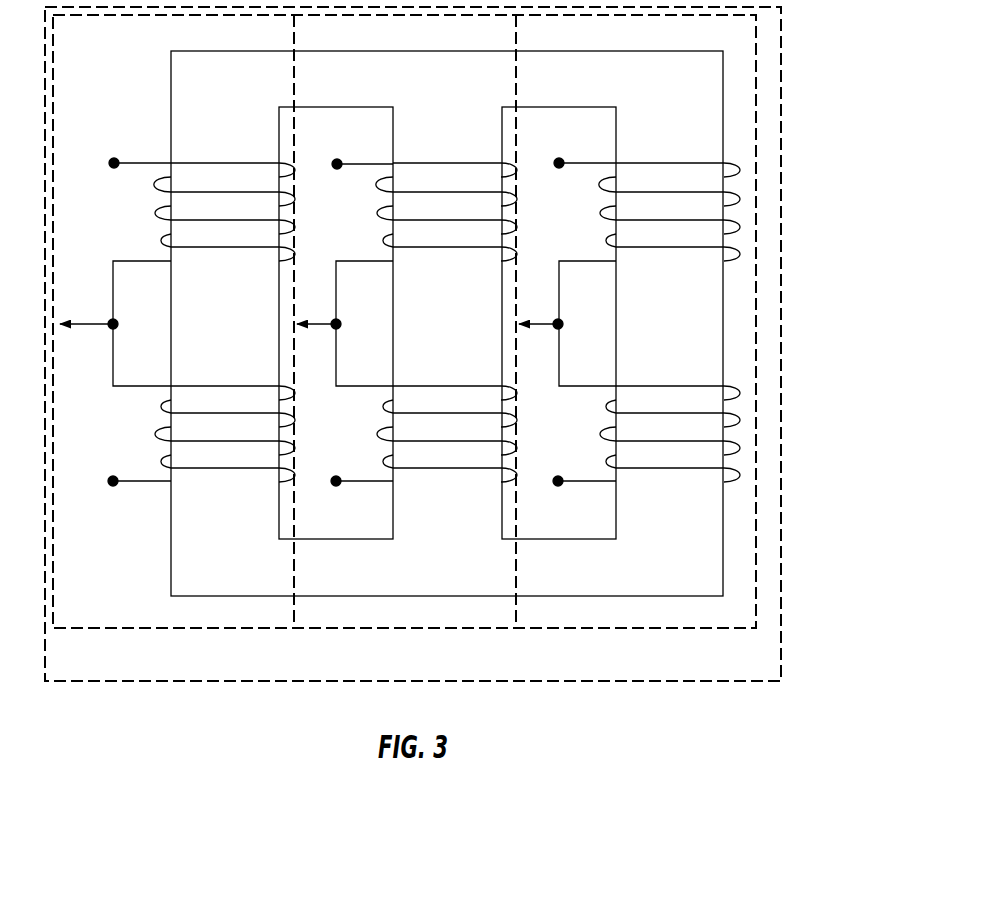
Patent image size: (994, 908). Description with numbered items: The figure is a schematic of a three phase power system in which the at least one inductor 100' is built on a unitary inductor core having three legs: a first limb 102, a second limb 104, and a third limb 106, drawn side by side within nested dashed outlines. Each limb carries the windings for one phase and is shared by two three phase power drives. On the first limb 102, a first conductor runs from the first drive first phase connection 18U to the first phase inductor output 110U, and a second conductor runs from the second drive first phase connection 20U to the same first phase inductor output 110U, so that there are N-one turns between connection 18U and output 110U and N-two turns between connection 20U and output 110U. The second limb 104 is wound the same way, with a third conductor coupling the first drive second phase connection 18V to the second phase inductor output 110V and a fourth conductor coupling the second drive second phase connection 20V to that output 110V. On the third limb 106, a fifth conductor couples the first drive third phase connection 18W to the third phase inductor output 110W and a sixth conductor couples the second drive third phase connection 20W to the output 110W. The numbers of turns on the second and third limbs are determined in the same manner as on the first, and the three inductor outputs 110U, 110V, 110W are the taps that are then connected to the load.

The inductor 100' is at (453, 344).
The first limb 102 is at (447, 323).
The second limb 104 is at (371, 323).
The third limb 106 is at (594, 323).
The first drive first phase connection 18U is at (107, 167).
The first drive second phase connection 18V is at (330, 168).
The first drive third phase connection 18W is at (552, 167).
The second drive first phase connection 20U is at (107, 486).
The second drive second phase connection 20V is at (330, 486).
The second drive third phase connection 20W is at (552, 486).
The first phase inductor output 110U is at (126, 321).
The second phase inductor output 110V is at (348, 321).
The third phase inductor output 110W is at (570, 321).